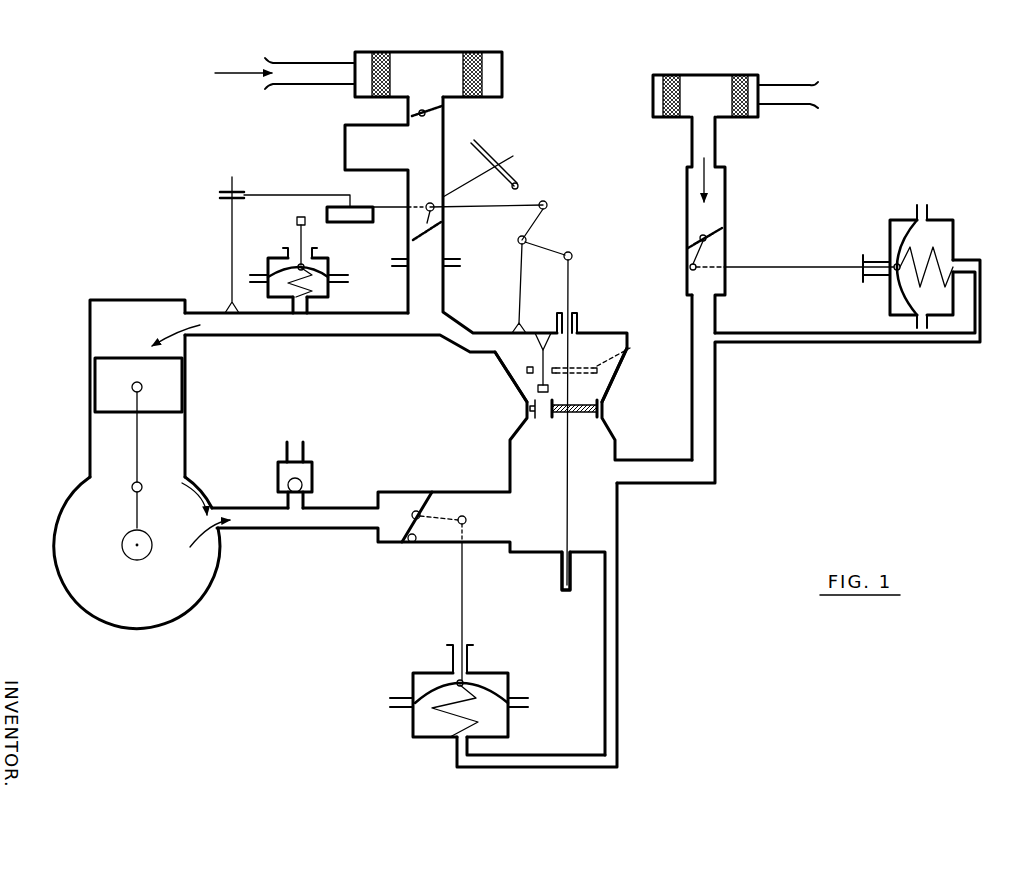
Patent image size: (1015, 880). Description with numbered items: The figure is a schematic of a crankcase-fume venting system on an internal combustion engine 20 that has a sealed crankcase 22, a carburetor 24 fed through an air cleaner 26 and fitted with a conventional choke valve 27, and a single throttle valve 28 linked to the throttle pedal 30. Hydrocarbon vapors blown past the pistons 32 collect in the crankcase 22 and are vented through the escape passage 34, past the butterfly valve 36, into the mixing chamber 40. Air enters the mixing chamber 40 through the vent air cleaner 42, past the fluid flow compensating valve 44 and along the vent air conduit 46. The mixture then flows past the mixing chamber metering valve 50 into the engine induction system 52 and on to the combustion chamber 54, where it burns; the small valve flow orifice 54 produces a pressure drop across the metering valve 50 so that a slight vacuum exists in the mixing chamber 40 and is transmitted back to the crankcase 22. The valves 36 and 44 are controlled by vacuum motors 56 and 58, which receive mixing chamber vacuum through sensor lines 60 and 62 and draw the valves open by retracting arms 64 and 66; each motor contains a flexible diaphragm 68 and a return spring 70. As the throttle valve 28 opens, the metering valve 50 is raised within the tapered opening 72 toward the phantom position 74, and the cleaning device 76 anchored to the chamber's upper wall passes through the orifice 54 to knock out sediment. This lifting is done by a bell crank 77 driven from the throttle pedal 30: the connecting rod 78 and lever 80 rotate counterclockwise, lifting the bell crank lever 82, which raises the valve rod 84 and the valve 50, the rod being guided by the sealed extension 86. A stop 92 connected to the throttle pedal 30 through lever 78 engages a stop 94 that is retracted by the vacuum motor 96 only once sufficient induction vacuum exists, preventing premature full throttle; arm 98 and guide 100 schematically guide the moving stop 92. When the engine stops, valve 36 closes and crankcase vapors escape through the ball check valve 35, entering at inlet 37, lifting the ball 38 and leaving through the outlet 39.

The internal combustion engine 20 is at (122, 464).
The crankcase 22 is at (72, 566).
The carburetor 24 is at (343, 148).
The air cleaner 26 is at (403, 50).
The choke valve 27 is at (410, 115).
The throttle valve 28 is at (411, 233).
The throttle pedal 30 is at (503, 168).
The pistons 32 is at (108, 384).
The escape passage 34 is at (240, 510).
The ball check valve 35 is at (297, 457).
The butterfly valve 36 is at (418, 546).
The inlet 37 is at (306, 498).
The ball 38 is at (288, 480).
The outlet 39 is at (293, 440).
The mixing chamber 40 is at (607, 535).
The vent air cleaner 42 is at (708, 73).
The fluid flow compensating valve 44 is at (690, 240).
The vent air conduit 46 is at (715, 448).
The mixing chamber metering valve 50 is at (581, 415).
The engine induction system 52 is at (396, 341).
The combustion chamber / valve flow orifice 54 is at (100, 329).
The vacuum motor 56 is at (410, 719).
The vacuum motor 58 is at (703, 480).
The sensor line 60 is at (618, 722).
The sensor line 62 is at (885, 343).
The arm 64 is at (465, 618).
The arm 66 is at (809, 266).
The flexible diaphragm 68 is at (903, 238).
The return spring 70 is at (946, 256).
The tapered opening 72 is at (523, 380).
The raised valve position 74 is at (632, 347).
The cleaning device 76 is at (548, 390).
The bell crank 77 is at (557, 240).
The connecting rod 78 is at (536, 200).
The lever 80 is at (534, 227).
The bell crank lever 82 is at (573, 255).
The valve rod 84 is at (570, 297).
The sealed extension 86 is at (572, 590).
The stop 92 is at (358, 212).
The stop 94 is at (296, 221).
The vacuum motor 96 is at (333, 297).
The arm 98 is at (300, 195).
The guide 100 is at (230, 221).